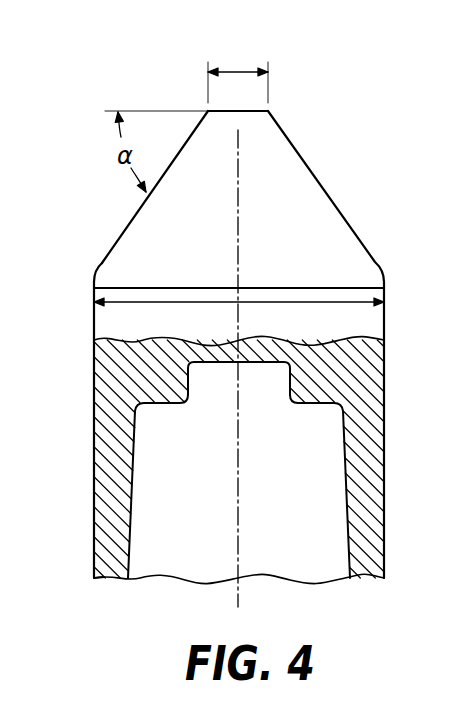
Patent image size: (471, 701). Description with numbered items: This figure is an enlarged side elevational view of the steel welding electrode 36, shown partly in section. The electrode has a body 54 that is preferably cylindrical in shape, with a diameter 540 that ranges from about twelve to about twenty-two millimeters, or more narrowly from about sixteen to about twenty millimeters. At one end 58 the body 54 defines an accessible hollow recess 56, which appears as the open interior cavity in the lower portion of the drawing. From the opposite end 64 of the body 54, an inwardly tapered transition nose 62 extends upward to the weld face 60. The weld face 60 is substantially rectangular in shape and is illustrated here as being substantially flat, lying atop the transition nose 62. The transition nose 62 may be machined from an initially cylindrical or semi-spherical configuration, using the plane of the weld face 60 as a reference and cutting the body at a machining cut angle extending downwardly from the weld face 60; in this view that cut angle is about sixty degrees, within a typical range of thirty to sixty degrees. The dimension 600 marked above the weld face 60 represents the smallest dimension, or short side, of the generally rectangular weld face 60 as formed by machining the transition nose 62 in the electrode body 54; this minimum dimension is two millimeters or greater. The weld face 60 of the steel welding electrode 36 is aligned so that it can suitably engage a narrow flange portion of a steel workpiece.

The steel welding electrode 36 is at (325, 240).
The body 54 is at (94, 316).
The diameter 540 is at (338, 303).
The hollow recess 56 is at (351, 550).
The end 58 is at (90, 583).
The weld face 60 is at (241, 110).
The dimension 600 is at (238, 70).
The transition nose 62 is at (128, 225).
The opposite end 64 is at (94, 286).